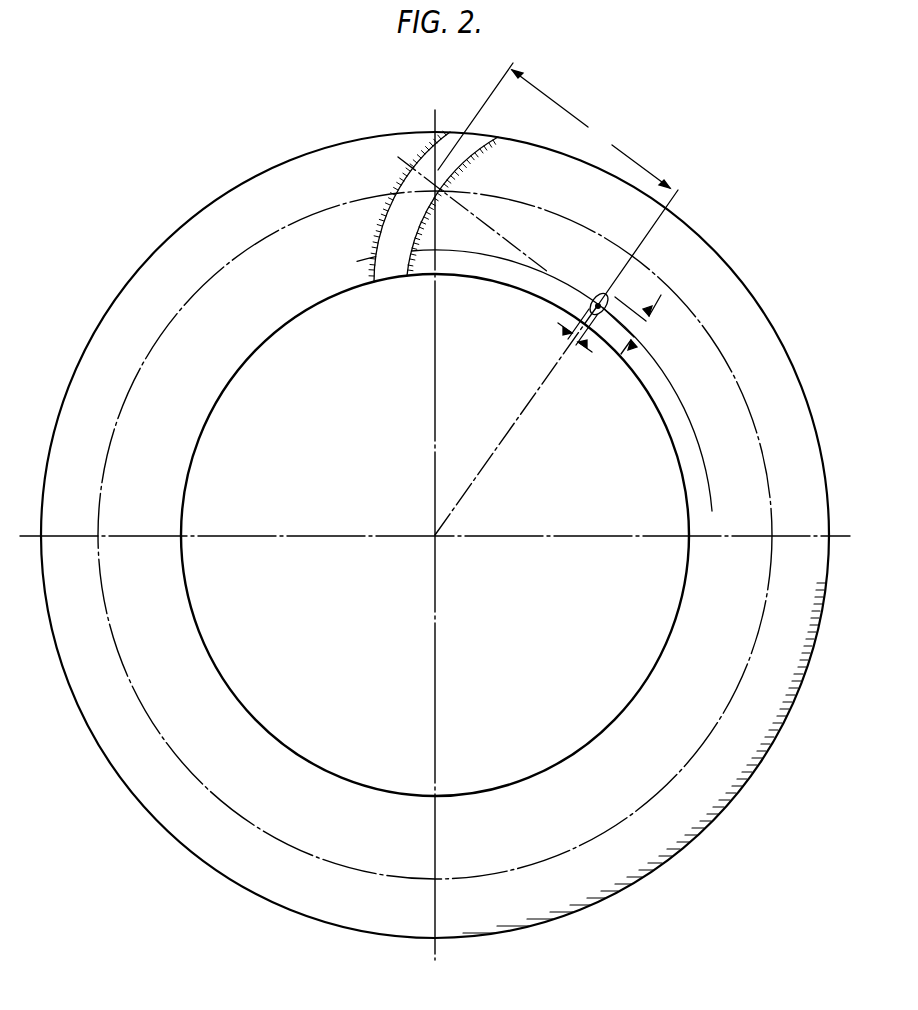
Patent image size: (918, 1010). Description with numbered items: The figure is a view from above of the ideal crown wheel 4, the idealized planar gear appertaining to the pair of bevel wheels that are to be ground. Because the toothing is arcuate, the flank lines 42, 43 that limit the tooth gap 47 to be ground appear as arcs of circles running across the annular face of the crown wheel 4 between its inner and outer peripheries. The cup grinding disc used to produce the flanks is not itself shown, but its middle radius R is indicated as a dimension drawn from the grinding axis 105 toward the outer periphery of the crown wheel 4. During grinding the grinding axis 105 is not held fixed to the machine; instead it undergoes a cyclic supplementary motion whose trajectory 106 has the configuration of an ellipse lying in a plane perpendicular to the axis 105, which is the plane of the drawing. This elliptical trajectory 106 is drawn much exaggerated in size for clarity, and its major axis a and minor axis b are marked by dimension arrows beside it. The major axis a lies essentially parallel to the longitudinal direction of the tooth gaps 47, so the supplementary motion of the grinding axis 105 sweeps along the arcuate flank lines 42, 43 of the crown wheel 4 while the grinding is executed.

The ideal crown wheel 4 is at (675, 236).
The flank line 42 is at (388, 228).
The flank line 43 is at (472, 152).
The tooth gap 47 is at (458, 133).
The grinding axis 105 is at (598, 294).
The trajectory 106 is at (588, 310).
The middle radius R is at (556, 302).
The major axis a is at (638, 324).
The minor axis b is at (577, 344).